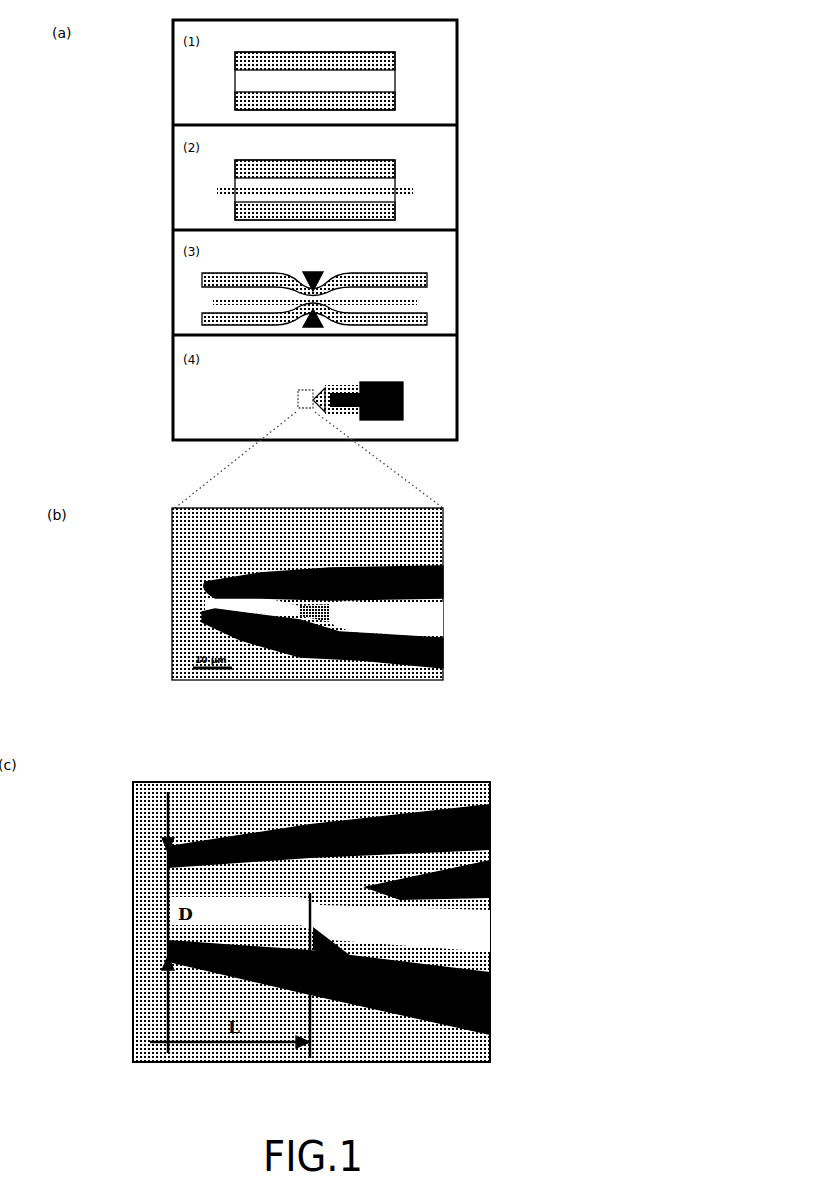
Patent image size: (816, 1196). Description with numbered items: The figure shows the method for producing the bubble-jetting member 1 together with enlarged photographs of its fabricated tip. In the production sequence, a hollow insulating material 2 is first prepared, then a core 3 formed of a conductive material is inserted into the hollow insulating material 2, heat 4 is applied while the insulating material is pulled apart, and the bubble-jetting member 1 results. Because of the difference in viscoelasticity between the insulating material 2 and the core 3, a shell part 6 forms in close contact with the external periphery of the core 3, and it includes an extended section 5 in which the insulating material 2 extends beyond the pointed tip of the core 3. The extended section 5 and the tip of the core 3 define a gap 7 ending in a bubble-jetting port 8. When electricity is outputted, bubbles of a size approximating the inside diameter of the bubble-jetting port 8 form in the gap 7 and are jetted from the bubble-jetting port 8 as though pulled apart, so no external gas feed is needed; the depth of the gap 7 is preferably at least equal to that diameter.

The bubble-jetting member 1 is at (345, 373).
The hollow insulating material 2 is at (393, 57).
The core 3 is at (413, 191).
The heat 4 is at (323, 276).
The extended section 5 is at (360, 565).
The shell part 6 is at (283, 573).
The gap 7 is at (242, 598).
The bubble-jetting port 8 is at (203, 612).